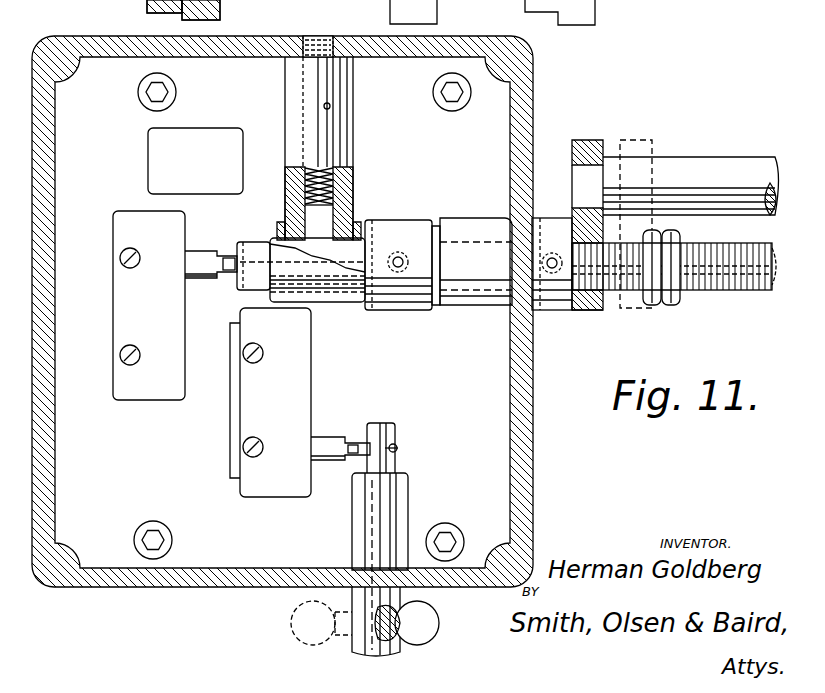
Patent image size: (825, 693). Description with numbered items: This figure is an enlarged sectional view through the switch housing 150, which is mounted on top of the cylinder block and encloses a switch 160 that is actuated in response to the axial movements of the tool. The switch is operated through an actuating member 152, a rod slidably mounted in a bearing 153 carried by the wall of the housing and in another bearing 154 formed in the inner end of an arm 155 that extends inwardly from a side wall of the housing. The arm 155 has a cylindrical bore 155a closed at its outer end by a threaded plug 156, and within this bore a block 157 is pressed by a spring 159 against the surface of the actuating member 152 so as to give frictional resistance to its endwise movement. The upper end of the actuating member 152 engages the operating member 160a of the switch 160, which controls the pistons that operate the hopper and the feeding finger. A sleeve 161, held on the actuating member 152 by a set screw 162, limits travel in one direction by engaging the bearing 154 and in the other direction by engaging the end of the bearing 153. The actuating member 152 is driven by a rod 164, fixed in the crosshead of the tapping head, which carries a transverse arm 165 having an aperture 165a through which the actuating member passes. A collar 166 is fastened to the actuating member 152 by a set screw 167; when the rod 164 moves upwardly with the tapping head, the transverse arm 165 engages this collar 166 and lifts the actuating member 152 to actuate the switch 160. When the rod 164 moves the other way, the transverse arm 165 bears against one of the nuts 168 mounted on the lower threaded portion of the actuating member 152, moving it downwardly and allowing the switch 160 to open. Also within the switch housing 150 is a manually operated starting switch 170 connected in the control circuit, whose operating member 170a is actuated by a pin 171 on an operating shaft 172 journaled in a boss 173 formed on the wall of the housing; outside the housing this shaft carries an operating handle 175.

The switch housing 150 is at (533, 100).
The actuating member 152 is at (728, 292).
The bearing 153 is at (460, 228).
The bearing 154 is at (340, 305).
The arm 155 is at (353, 135).
The cylindrical bore 155a is at (330, 108).
The threaded plug 156 is at (318, 38).
The block 157 is at (320, 213).
The spring 159 is at (335, 184).
The switch 160 is at (135, 212).
The operating member 160a is at (226, 262).
The sleeve 161 is at (395, 311).
The set screw 162 is at (402, 268).
The rod 164 is at (716, 165).
The transverse arm 165 is at (635, 140).
The aperture 165a is at (596, 312).
The collar 166 is at (552, 312).
The set screw 167 is at (553, 256).
The nuts 168 is at (668, 305).
The starting switch 170 is at (293, 382).
The operating member 170a is at (352, 440).
The pin 171 is at (398, 448).
The operating shaft 172 is at (395, 466).
The boss 173 is at (408, 495).
The operating handle 175 is at (428, 620).